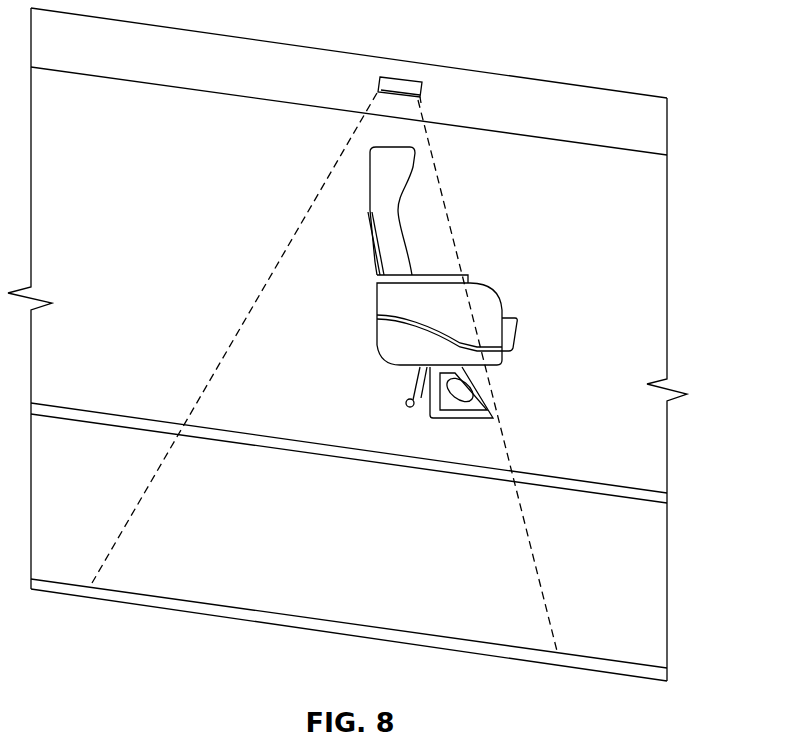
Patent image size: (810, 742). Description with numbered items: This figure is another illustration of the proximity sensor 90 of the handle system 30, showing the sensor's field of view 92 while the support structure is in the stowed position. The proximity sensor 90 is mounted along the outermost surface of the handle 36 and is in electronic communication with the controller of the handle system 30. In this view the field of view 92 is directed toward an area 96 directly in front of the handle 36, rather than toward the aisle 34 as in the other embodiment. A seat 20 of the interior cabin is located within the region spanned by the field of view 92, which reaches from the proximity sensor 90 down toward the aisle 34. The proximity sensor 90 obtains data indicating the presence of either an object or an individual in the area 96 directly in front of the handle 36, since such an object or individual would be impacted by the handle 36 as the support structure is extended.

The seat 20 is at (393, 232).
The handle system 30 is at (683, 138).
The aisle 34 is at (633, 598).
The handle 36 is at (585, 98).
The proximity sensor 90 is at (405, 76).
The field of view 92 is at (262, 276).
The area directly in front of the handle 96 is at (488, 568).